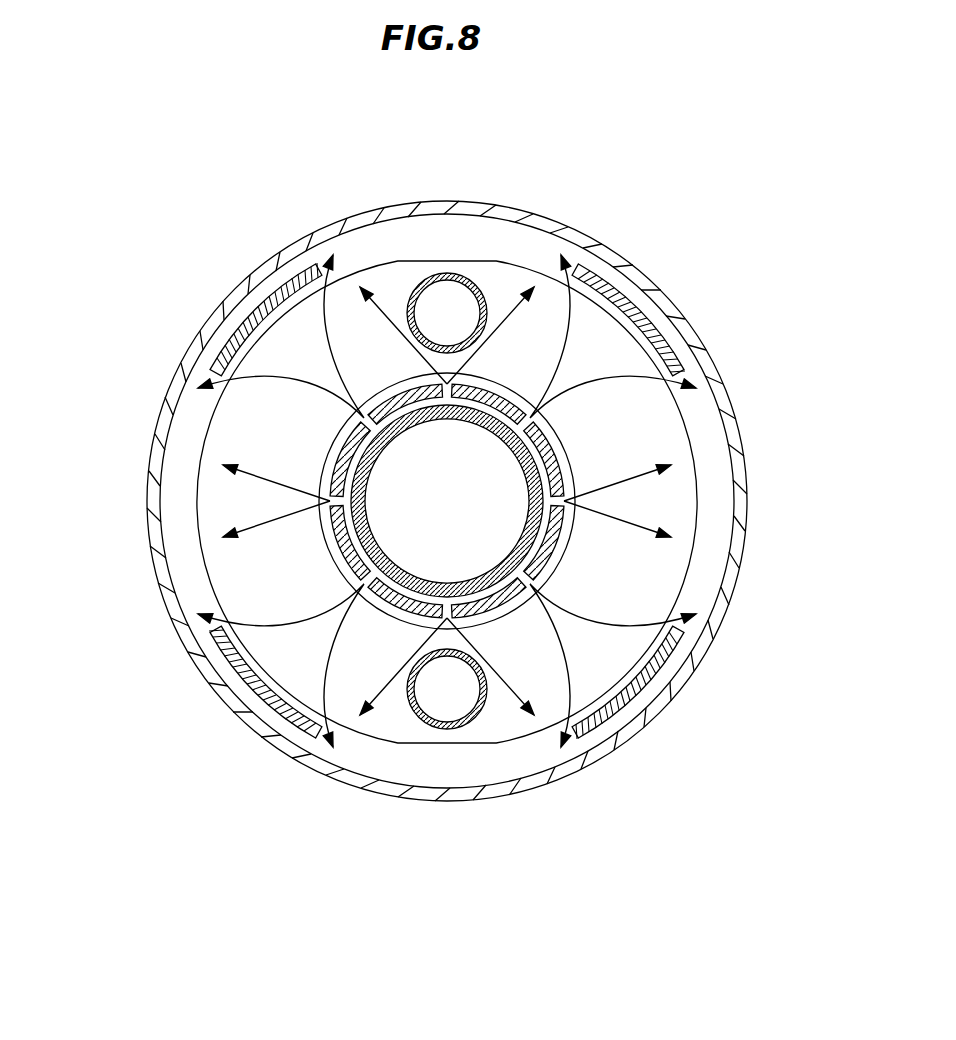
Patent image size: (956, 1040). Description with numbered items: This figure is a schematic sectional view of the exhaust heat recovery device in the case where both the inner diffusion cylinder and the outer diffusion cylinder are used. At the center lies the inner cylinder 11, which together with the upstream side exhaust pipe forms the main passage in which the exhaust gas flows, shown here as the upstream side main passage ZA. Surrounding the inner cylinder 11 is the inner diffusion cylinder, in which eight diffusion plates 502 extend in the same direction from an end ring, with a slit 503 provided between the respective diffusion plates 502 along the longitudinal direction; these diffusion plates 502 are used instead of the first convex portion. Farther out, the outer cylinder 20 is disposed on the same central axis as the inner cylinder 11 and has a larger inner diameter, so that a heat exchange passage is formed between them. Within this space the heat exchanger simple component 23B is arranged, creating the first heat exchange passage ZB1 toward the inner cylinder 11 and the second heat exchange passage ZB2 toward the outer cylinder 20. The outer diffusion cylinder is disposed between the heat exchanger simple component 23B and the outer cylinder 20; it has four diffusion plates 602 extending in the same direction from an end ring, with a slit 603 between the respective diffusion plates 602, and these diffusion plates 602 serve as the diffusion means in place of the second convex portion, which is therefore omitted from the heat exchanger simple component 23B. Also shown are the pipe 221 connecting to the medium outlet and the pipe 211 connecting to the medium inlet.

The outer cylinder 20 is at (588, 237).
The slit 603 is at (500, 240).
The diffusion plate 602 is at (262, 313).
The heat exchanger simple component 23B is at (678, 410).
The pipe 221 is at (448, 274).
The pipe 211 is at (475, 712).
The diffusion plate 502 is at (403, 398).
The slit 503 is at (386, 437).
The inner cylinder 11 is at (527, 485).
The upstream side main passage ZA is at (446, 466).
The first heat exchange passage ZB1 is at (413, 626).
The second heat exchange passage ZB2 is at (422, 765).